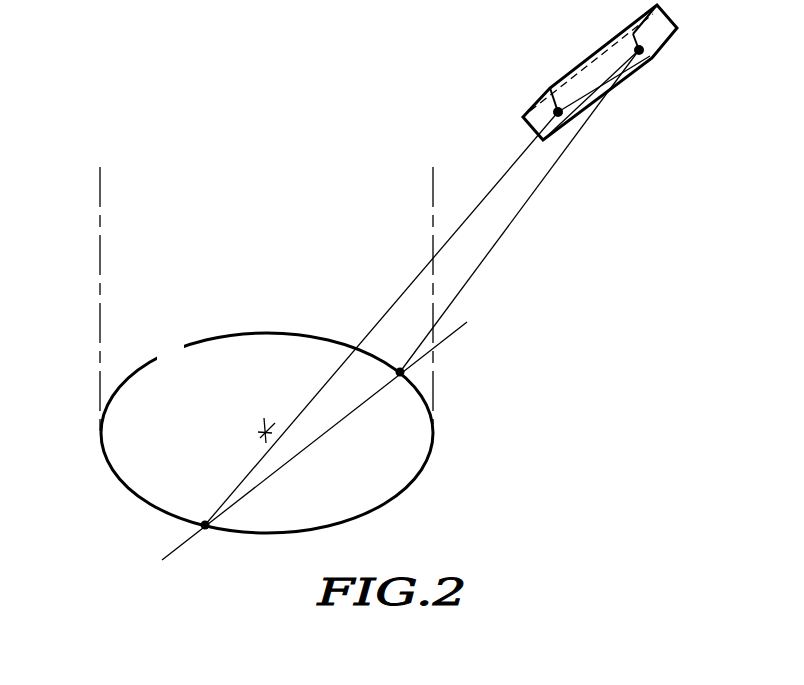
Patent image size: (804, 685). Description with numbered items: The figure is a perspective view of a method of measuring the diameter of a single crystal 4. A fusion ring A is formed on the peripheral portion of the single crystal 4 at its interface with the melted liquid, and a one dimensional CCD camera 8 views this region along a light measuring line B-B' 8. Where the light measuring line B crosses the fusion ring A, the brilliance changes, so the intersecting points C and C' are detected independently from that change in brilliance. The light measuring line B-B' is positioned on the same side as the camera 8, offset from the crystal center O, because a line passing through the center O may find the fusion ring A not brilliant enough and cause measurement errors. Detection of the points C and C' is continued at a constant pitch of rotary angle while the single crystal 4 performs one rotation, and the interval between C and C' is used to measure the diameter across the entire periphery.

The single crystal 4 is at (98, 260).
The one dimensional CCD camera 8 is at (576, 71).
The fusion ring A is at (267, 433).
The center of the single crystal O is at (266, 411).
The light measuring line B-B' B is at (312, 441).
The intersecting points C and C' C is at (419, 306).